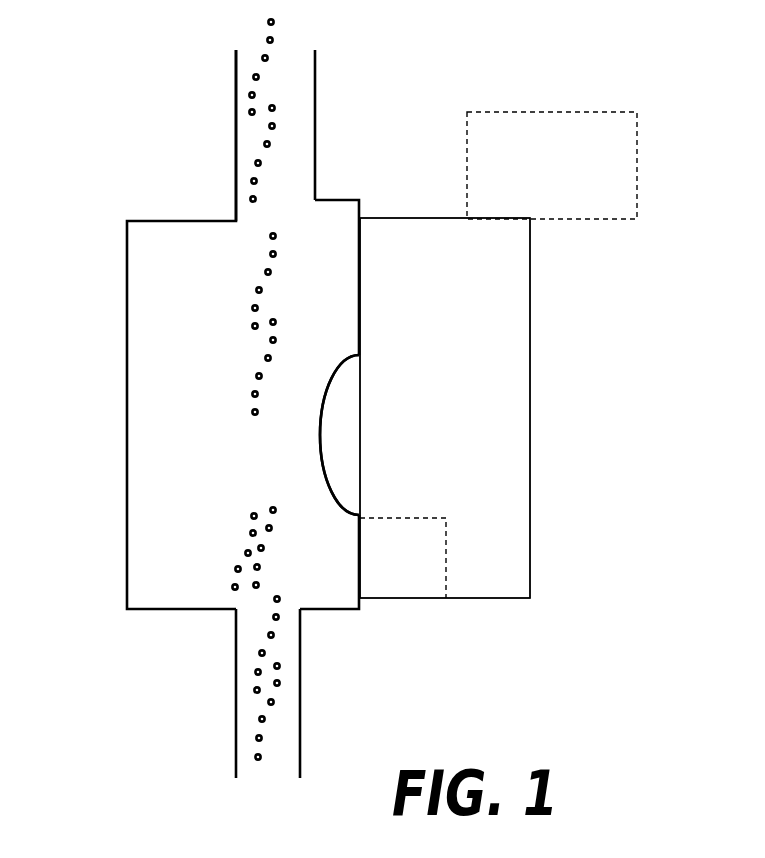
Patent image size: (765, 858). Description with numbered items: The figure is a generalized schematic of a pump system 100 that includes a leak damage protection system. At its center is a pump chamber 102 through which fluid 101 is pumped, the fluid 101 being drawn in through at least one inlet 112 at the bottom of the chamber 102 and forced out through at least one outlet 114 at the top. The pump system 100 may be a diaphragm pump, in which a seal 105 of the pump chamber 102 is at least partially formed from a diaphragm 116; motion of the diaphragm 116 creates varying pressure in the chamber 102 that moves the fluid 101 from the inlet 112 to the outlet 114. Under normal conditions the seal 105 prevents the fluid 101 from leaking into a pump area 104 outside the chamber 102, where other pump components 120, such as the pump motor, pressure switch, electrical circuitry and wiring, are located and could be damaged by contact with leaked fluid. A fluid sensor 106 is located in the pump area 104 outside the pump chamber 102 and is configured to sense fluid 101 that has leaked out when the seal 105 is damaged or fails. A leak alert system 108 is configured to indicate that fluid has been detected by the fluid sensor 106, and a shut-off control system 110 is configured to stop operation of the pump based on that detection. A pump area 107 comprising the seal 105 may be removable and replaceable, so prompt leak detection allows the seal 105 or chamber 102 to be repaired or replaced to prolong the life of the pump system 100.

The pump system 100 is at (697, 53).
The fluid 101 is at (227, 563).
The pump chamber 102 is at (219, 326).
The pump area 104 is at (461, 417).
The seal 105 is at (328, 440).
The fluid sensor 106 is at (419, 571).
The pump area comprising the seal 107 is at (238, 410).
The leak alert system 108 is at (615, 191).
The shut-off control system 110 is at (527, 172).
The inlet 112 is at (300, 713).
The outlet 114 is at (293, 95).
The diaphragm 116 is at (324, 404).
The pump components 120 is at (461, 379).